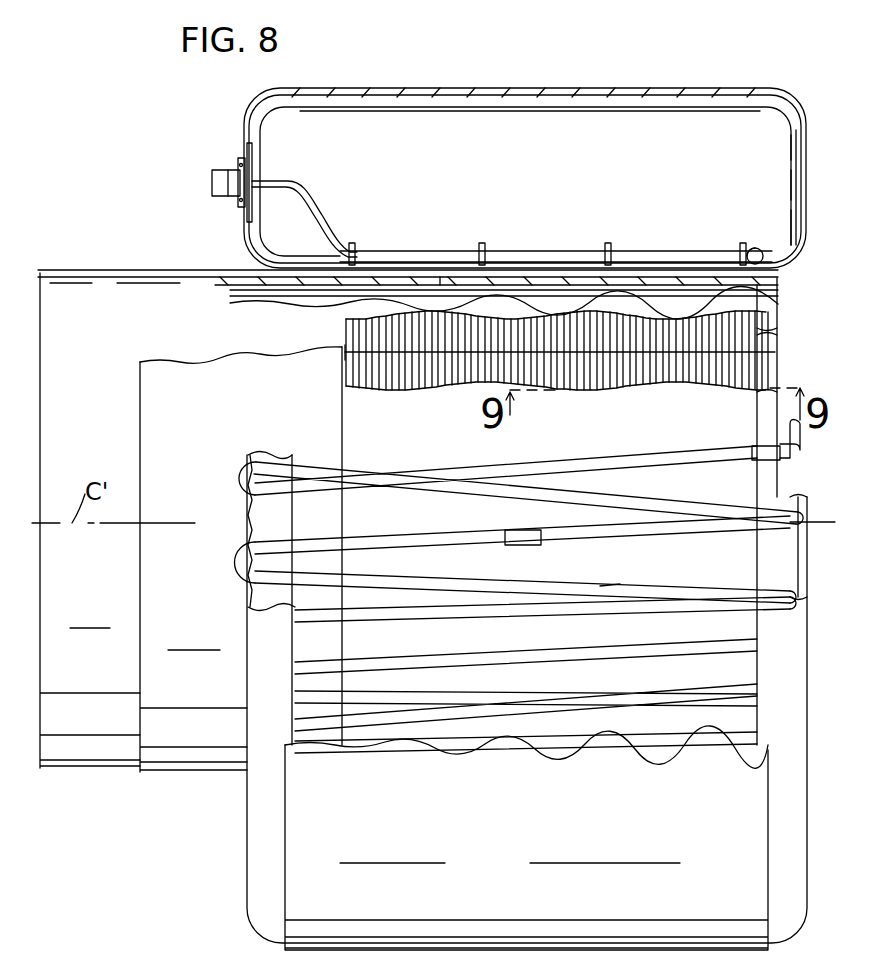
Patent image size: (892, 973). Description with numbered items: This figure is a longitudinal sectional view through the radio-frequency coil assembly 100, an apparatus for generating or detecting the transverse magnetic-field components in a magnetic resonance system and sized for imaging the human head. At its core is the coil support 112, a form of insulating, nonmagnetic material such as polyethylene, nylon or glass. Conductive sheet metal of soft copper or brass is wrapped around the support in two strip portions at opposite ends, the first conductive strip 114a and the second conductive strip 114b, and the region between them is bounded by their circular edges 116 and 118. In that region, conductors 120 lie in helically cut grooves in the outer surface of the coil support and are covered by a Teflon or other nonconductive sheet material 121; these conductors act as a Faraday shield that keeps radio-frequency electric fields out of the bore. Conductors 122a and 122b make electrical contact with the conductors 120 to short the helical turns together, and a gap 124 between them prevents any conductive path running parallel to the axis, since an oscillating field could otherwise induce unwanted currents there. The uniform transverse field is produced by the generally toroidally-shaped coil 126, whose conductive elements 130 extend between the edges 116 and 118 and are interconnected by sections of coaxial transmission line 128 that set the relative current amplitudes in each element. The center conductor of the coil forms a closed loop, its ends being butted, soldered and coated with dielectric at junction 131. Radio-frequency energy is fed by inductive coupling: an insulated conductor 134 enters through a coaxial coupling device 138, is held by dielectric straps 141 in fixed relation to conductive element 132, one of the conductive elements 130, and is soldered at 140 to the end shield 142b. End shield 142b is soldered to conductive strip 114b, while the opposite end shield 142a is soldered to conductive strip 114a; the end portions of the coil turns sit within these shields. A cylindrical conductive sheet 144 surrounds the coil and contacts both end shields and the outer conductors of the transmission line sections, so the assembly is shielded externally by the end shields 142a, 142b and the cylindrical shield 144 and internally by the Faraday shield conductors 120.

The coil assembly 100 is at (126, 209).
The coil support 112 is at (95, 293).
The first conductive strip 114a is at (190, 273).
The second conductive strip 114b is at (780, 283).
The circular edge 116 is at (344, 436).
The circular edge 118 is at (756, 430).
The conductors 120 is at (398, 272).
The nonconductive sheet material 121 is at (447, 270).
The conductor 122a is at (345, 352).
The conductor 122b is at (768, 352).
The gap 124 is at (551, 329).
The toroidally-shaped coil 126 is at (732, 505).
The coaxial transmission line sections 128 is at (628, 107).
The conductive elements 130 is at (622, 598).
The junction 131 is at (522, 548).
The conductive element 132 is at (565, 258).
The insulated conductor 134 is at (300, 222).
The coaxial coupling device 138 is at (232, 170).
The solder connection 140 is at (762, 248).
The straps 141 is at (482, 252).
The end shield 142a is at (262, 98).
The end shield 142b is at (806, 100).
The cylindrical conductive shield 144 is at (521, 90).